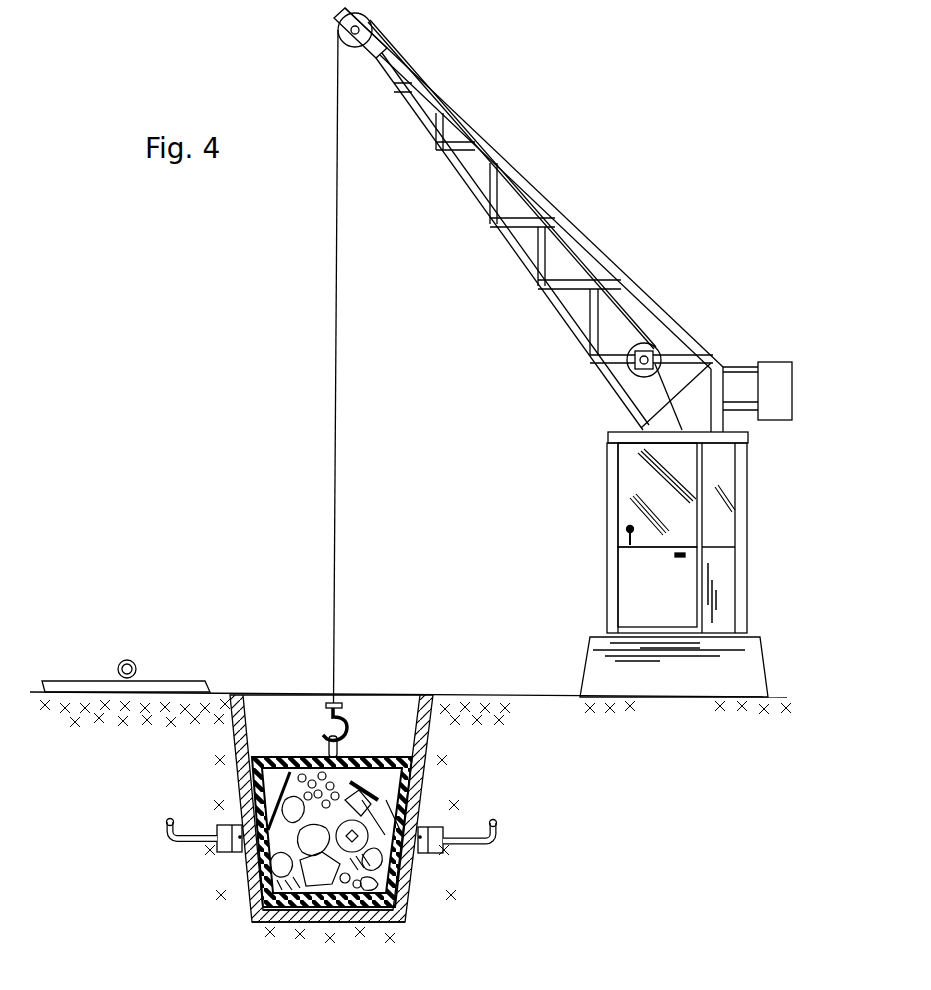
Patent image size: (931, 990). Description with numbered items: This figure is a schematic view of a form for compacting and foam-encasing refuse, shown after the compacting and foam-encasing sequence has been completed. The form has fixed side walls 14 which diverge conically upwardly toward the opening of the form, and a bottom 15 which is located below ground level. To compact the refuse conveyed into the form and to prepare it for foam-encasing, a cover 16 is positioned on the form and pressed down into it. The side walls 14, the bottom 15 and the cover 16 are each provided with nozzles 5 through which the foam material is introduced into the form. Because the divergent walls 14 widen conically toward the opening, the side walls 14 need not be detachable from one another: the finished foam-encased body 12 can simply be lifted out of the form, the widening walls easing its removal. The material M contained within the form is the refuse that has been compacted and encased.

The cover 16 is at (182, 690).
The side walls 14 is at (250, 800).
The bottom 15 is at (363, 918).
The bucket with material M is at (295, 918).
The foam-encased body 12 is at (352, 762).
The nozzles 5 is at (230, 842).